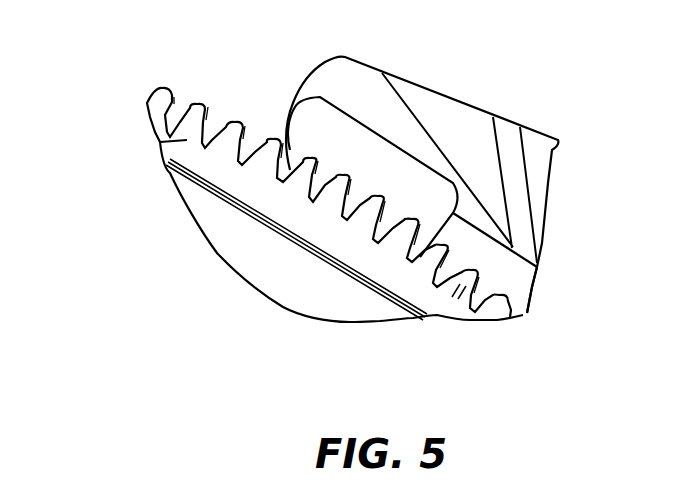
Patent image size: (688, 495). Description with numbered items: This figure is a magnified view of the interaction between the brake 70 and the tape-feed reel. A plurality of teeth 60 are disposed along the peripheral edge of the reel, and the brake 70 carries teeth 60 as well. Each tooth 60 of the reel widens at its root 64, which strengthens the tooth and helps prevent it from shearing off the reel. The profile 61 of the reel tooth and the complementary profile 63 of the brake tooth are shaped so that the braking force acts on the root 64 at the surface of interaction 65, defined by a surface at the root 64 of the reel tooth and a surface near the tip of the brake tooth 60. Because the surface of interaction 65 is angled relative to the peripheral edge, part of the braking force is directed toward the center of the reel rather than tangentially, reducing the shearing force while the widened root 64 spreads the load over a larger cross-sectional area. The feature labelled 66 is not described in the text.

The tooth 60 is at (274, 138).
The profile of the tooth of the reel 61 is at (160, 142).
The complementary profile of the tooth of the brake 63 is at (407, 260).
The root 64 is at (461, 298).
The surface of interaction 65 is at (283, 183).
The edge 66 is at (530, 282).
The brake 70 is at (386, 100).